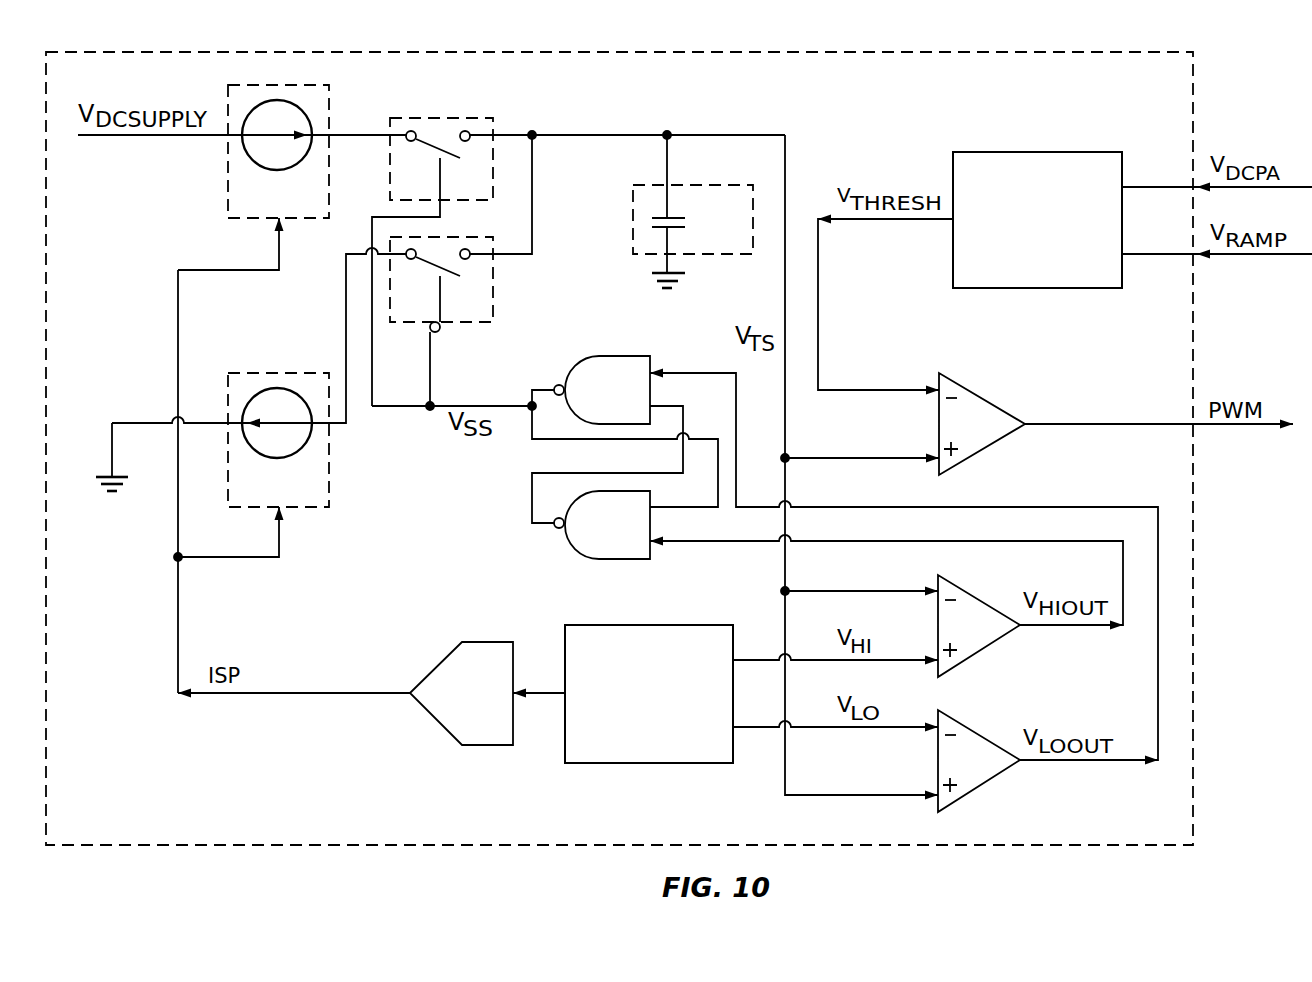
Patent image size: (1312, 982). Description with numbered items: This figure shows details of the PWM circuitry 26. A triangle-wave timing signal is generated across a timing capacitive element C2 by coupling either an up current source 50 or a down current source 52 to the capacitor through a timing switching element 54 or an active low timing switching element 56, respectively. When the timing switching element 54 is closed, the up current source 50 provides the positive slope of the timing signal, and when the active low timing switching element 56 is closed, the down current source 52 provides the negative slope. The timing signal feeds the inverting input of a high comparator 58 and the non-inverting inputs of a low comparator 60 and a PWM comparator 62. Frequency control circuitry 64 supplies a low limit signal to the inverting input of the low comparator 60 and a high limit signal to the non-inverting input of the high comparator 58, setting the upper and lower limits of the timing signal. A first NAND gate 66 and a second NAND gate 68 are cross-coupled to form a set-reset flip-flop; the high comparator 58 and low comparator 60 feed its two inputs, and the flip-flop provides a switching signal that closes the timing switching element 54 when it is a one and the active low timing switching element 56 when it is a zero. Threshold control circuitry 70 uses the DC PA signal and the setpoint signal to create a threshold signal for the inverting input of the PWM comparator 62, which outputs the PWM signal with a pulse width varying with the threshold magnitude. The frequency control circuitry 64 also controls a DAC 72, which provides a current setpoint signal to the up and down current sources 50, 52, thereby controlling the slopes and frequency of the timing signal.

The PWM circuitry 26 is at (1152, 818).
The up current source 50 is at (263, 209).
The down current source 52 is at (263, 496).
The timing switching element 54 is at (452, 191).
The active low timing switching element 56 is at (452, 312).
The timing capacitive element C2 is at (701, 229).
The high comparator 58 is at (955, 632).
The low comparator 60 is at (955, 767).
The PWM comparator 62 is at (955, 431).
The frequency control circuitry 64 is at (635, 744).
The first NAND gate 66 is at (598, 399).
The second NAND gate 68 is at (598, 534).
The threshold control circuitry 70 is at (1024, 269).
The DAC 72 is at (456, 701).